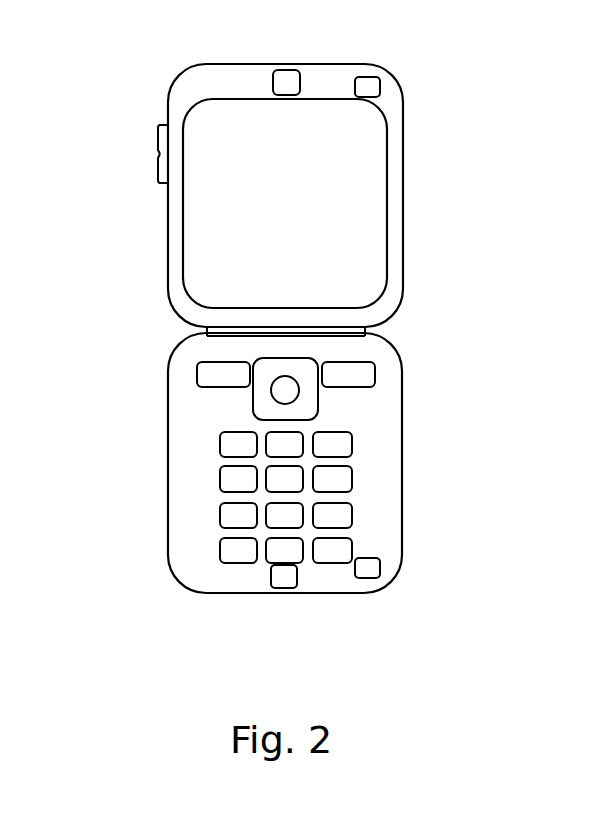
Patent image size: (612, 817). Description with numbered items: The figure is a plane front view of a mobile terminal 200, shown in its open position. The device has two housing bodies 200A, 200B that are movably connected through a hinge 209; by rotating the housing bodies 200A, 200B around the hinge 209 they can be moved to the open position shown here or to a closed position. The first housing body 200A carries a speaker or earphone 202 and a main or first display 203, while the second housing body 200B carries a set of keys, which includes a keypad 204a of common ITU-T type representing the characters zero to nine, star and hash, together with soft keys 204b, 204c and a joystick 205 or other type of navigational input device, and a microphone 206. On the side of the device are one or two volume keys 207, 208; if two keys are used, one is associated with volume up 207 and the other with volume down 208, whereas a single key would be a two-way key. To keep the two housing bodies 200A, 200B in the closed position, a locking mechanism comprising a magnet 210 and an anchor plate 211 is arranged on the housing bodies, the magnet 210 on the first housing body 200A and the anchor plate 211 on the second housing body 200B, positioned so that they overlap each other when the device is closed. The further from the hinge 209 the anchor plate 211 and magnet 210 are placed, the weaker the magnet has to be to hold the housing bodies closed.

The mobile terminal 200 is at (269, 321).
The first housing body 200A is at (177, 307).
The second housing body 200B is at (173, 575).
The speaker or earphone 202 is at (287, 80).
The main or first display 203 is at (387, 203).
The keypad 204a is at (220, 445).
The soft key 204b is at (197, 375).
The soft key 204c is at (378, 375).
The joystick 205 is at (318, 405).
The microphone 206 is at (284, 590).
The volume key 207 is at (157, 138).
The volume key 208 is at (157, 170).
The hinge 209 is at (380, 330).
The magnet 210 is at (380, 568).
The anchor plate 211 is at (370, 85).